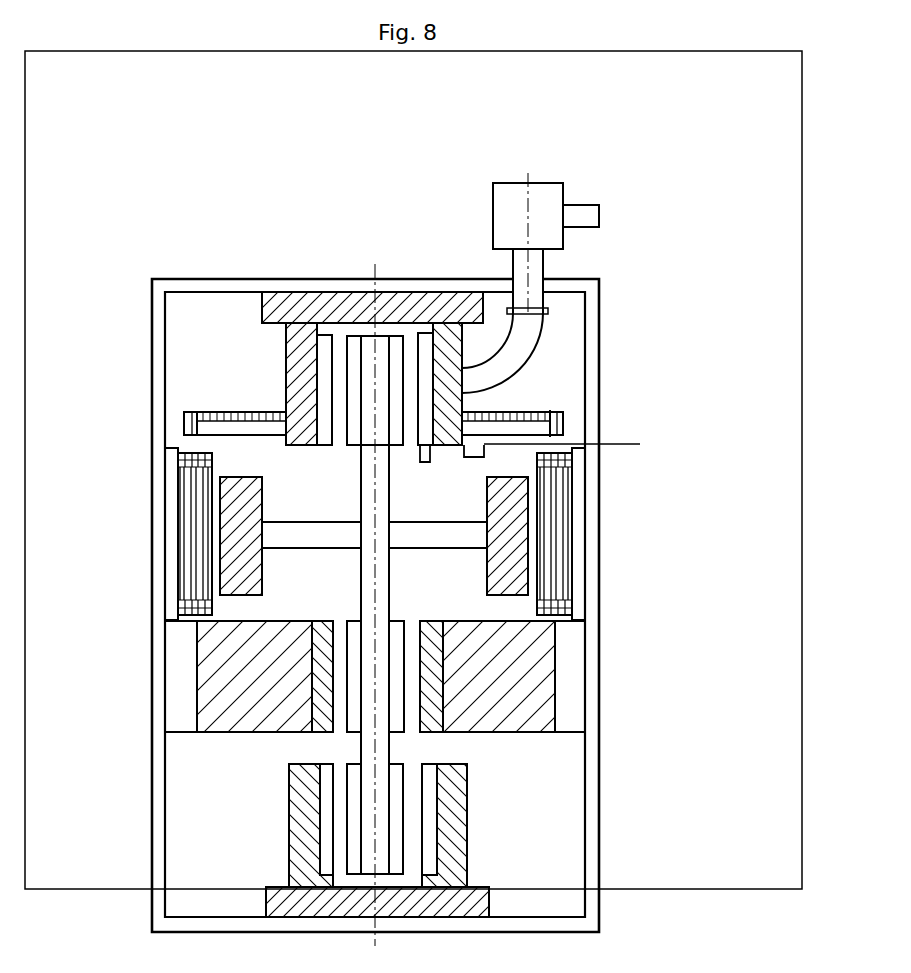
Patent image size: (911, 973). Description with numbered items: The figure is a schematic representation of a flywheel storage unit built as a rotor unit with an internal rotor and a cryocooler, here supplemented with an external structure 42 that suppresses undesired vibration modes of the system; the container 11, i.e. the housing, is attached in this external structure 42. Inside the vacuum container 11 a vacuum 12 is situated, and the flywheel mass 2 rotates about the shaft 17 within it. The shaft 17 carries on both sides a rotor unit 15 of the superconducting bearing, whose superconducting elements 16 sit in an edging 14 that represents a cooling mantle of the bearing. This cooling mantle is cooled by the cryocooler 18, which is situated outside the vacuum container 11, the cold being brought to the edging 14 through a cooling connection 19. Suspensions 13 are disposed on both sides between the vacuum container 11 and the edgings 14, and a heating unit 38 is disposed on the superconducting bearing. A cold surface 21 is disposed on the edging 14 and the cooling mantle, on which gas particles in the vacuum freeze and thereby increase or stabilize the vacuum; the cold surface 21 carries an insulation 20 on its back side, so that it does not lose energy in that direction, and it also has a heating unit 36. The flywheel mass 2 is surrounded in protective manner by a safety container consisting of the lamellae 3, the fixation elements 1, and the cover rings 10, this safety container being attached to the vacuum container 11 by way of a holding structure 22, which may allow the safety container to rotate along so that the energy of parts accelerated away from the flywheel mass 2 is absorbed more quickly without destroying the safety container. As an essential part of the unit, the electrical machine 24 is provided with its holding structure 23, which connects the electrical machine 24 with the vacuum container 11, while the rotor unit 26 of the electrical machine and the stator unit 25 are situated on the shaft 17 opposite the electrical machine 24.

The fixation elements 1 is at (203, 468).
The flywheel mass 2 is at (250, 488).
The lamellae 3 is at (203, 510).
The cover rings 10 is at (190, 420).
The vacuum container 11 is at (176, 284).
The vacuum 12 is at (174, 343).
The suspensions 13 is at (266, 298).
The edging 14 is at (301, 345).
The rotor unit of the bearing 15 is at (354, 340).
The superconducting elements 16 is at (428, 362).
The shaft 17 is at (383, 360).
The cryocooler 18 is at (545, 196).
The cooling connection 19 is at (523, 346).
The insulation 20 is at (519, 408).
The cold surface 21 is at (527, 425).
The holding structure 22 is at (183, 461).
The holding structure of the electrical machine 23 is at (575, 639).
The electrical machine 24 is at (532, 688).
The stator unit 25 is at (352, 695).
The rotor unit of the electrical machine 26 is at (352, 639).
The heating unit 36 is at (564, 445).
The heating unit 38 is at (430, 462).
The external structure 42 is at (755, 294).